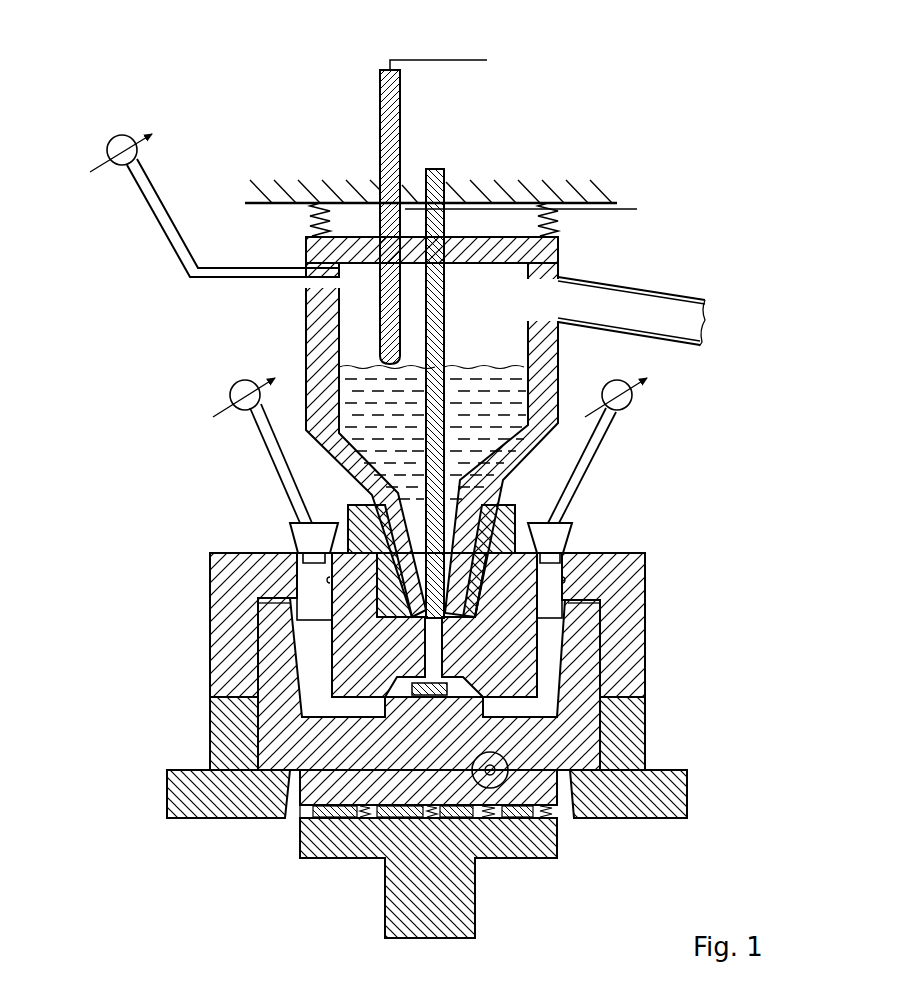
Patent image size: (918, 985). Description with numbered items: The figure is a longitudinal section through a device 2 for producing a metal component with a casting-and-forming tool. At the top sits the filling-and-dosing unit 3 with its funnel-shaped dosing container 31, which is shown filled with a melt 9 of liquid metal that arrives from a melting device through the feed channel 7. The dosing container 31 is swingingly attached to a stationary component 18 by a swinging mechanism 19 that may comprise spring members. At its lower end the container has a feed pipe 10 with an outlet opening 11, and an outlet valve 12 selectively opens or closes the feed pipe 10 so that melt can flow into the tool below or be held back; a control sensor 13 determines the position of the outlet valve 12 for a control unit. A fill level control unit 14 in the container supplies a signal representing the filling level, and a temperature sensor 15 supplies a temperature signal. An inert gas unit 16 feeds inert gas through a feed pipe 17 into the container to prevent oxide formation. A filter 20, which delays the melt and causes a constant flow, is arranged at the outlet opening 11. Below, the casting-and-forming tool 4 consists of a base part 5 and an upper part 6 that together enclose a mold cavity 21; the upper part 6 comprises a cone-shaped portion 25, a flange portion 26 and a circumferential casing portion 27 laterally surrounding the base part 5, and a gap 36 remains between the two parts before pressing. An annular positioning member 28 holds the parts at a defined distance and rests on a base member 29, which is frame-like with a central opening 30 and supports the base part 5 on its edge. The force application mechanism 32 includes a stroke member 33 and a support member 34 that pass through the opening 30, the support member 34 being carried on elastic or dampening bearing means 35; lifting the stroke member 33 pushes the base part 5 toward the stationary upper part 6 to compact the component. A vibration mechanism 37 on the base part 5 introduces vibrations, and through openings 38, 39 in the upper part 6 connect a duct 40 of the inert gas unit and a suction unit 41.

The device 2 is at (674, 60).
The filling-and-dosing unit 3 is at (168, 328).
The casting-and-forming tool 4 is at (143, 622).
The base part 5 is at (588, 740).
The upper part 6 is at (622, 558).
The feed channel 7 is at (680, 312).
The melt 9 is at (517, 392).
The feed pipe 10 is at (412, 652).
The outlet opening 11 is at (415, 682).
The outlet valve 12 is at (444, 302).
The control sensor 13 is at (630, 208).
The fill level control unit 14 is at (400, 123).
The temperature sensor 15 is at (447, 60).
The inert gas unit 16 is at (111, 137).
The feed pipe 17 is at (160, 218).
The stationary component 18 is at (578, 203).
The swinging mechanism 19 is at (560, 224).
The filter 20 is at (475, 938).
The mold cavity 21 is at (300, 712).
The cone-shaped portion 25 is at (545, 667).
The flange portion 26 is at (263, 552).
The casing portion 27 is at (640, 637).
The positioning member 28 is at (648, 715).
The base member 29 is at (177, 798).
The central opening 30 is at (565, 802).
The dosing container 31 is at (306, 334).
The force application mechanism 32 is at (517, 897).
The stroke member 33 is at (390, 917).
The support member 34 is at (300, 775).
The bearing means 35 is at (340, 820).
The gap 36 is at (600, 594).
The vibration mechanism 37 is at (551, 839).
The through opening 38 is at (297, 585).
The through opening 39 is at (565, 582).
The duct 40 is at (264, 443).
The suction unit 41 is at (633, 395).